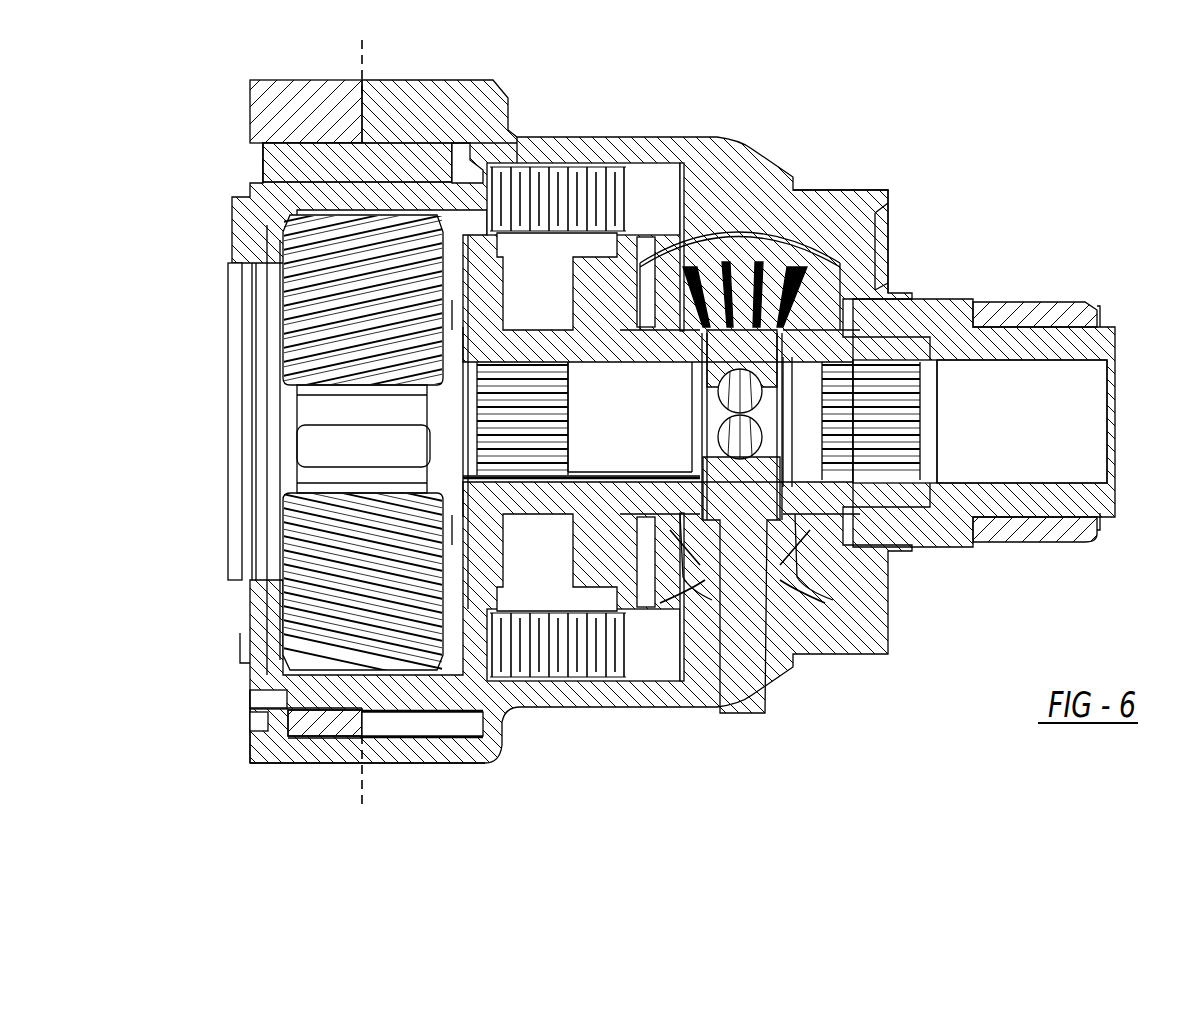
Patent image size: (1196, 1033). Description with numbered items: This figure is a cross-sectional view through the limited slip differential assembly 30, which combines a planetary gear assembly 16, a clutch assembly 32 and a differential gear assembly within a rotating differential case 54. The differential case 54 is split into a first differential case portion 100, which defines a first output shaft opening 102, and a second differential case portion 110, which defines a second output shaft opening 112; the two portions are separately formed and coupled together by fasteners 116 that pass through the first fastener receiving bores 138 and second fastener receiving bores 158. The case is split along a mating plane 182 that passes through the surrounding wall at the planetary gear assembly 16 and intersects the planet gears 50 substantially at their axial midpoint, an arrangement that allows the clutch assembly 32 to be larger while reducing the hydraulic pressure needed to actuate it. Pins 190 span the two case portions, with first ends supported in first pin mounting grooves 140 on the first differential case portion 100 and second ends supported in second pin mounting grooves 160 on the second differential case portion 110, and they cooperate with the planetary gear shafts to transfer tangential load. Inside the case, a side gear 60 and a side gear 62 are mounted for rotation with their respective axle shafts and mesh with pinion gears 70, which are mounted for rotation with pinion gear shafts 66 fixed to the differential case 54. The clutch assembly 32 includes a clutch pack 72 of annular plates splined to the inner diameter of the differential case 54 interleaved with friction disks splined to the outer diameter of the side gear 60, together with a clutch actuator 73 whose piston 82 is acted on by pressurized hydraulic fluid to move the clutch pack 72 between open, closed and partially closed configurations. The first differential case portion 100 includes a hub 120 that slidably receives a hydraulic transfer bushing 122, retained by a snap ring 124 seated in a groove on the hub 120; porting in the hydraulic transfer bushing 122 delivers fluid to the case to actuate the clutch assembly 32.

The planetary gear assembly 16 is at (392, 62).
The limited slip differential assembly 30 is at (918, 213).
The clutch assembly 32 is at (583, 723).
The planet gears 50 is at (355, 302).
The differential case 54 is at (840, 92).
The side gear 60 is at (720, 633).
The side gear 62 is at (827, 327).
The pinion gear shafts 66 is at (743, 643).
The pinion gears 70 is at (706, 250).
The clutch pack 72 is at (567, 165).
The clutch actuator 73 is at (658, 148).
The piston 82 is at (643, 197).
The first differential case portion 100 is at (757, 177).
The first output shaft opening 102 is at (1050, 407).
The second differential case portion 110 is at (258, 108).
The second output shaft opening 112 is at (250, 413).
The fasteners 116 is at (320, 730).
The hub 120 is at (1023, 323).
The hydraulic transfer bushing 122 is at (1077, 310).
The snap ring 124 is at (1100, 527).
The first fastener receiving bores 138 is at (430, 737).
The first pin mounting grooves 140 is at (455, 125).
The second fastener receiving bores 158 is at (335, 745).
The second pin mounting grooves 160 is at (297, 163).
The mating plane 182 is at (362, 43).
The pins 190 is at (398, 157).